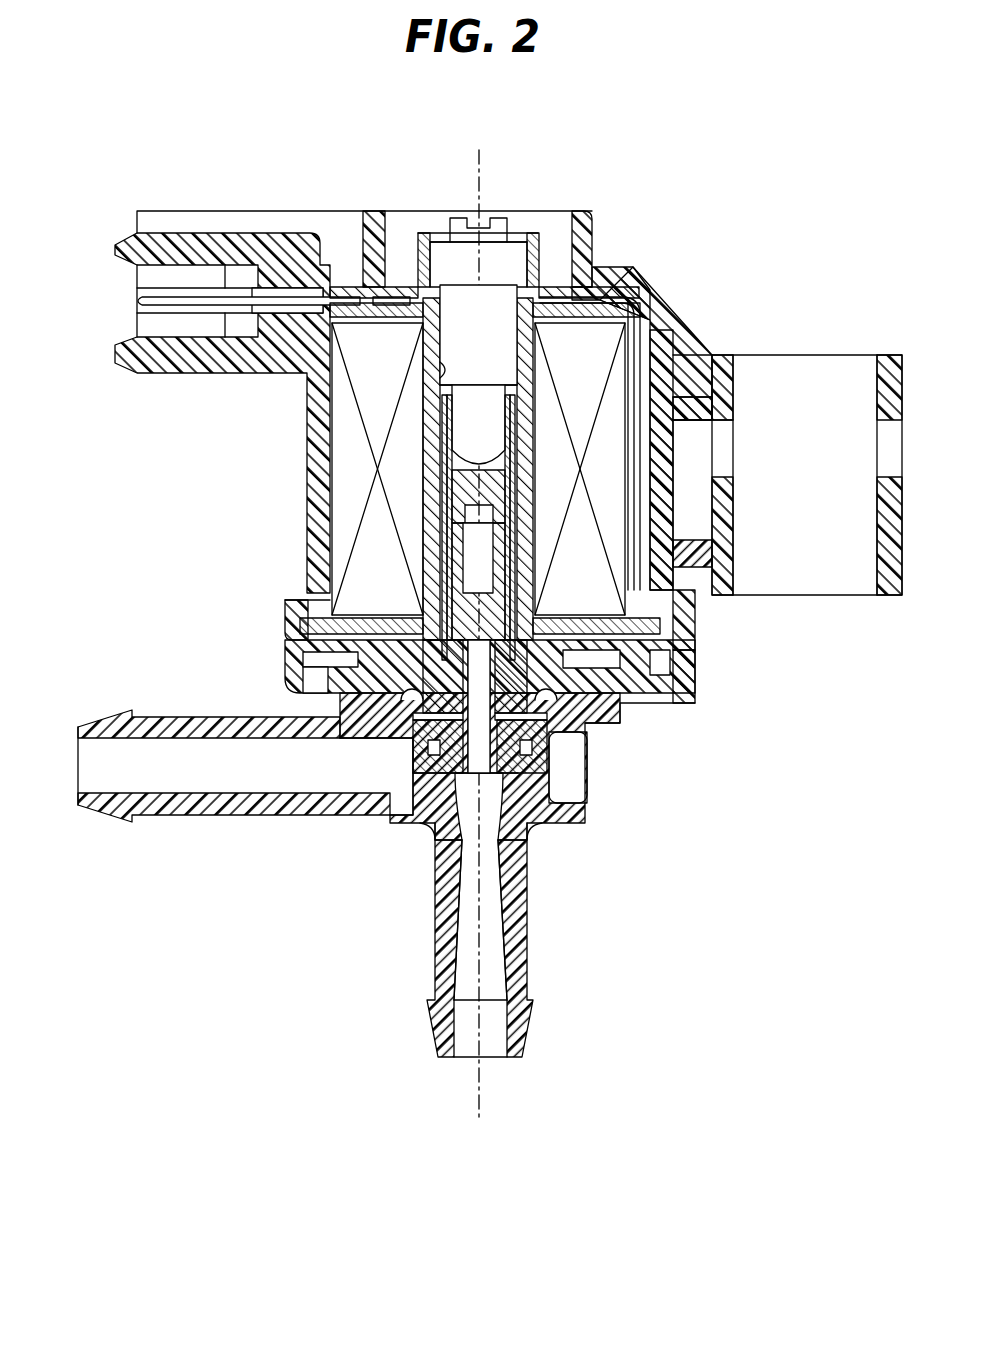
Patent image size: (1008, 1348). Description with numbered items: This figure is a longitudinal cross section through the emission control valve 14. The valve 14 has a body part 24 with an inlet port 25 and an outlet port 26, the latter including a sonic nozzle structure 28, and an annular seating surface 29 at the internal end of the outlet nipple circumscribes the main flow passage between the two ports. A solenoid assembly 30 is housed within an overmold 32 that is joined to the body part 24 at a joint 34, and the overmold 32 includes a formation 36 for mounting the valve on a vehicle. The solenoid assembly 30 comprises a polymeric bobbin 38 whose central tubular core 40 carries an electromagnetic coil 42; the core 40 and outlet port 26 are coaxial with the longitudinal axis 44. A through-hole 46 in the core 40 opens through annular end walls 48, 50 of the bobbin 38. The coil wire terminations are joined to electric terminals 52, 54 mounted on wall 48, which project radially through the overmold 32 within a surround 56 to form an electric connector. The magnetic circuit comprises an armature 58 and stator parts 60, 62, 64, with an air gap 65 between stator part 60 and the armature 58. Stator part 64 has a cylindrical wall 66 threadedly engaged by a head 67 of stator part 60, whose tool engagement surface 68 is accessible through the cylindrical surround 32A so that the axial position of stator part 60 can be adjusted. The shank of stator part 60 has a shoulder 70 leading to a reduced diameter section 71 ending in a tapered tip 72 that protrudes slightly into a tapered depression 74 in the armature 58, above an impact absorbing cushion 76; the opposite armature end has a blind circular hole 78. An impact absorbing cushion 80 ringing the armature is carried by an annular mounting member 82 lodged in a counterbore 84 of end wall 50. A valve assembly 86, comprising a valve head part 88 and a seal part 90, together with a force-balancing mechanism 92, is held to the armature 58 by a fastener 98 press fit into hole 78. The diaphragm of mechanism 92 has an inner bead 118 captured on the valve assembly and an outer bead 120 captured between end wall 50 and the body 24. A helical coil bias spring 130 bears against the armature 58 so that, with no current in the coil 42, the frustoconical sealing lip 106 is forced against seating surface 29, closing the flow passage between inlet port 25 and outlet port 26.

The valve 14 is at (133, 210).
The body part 24 is at (590, 828).
The inlet port 25 is at (148, 818).
The outlet port 26 is at (525, 992).
The sonic nozzle structure 28 is at (440, 850).
The annular seating surface 29 is at (590, 805).
The solenoid assembly 30 is at (640, 278).
The overmold 32 is at (668, 312).
The cylindrical surround 32A is at (580, 212).
The joint 34 is at (622, 704).
The formation 36 is at (853, 355).
The polymeric bobbin 38 is at (648, 330).
The central tubular core 40 is at (432, 322).
The electromagnetic coil 42 is at (642, 375).
The longitudinal axis 44 is at (481, 1082).
The through-hole 46 is at (440, 378).
The end wall 48 is at (590, 297).
The end wall 50 is at (320, 650).
The electric terminal 52 is at (196, 300).
The electric terminal 54 is at (150, 298).
The surround 56 is at (240, 355).
The armature 58 is at (515, 550).
The stator part 60 is at (525, 260).
The stator part 62 is at (290, 612).
The stator part 64 is at (688, 362).
The air gap 65 is at (435, 525).
The cylindrical wall 66 is at (408, 250).
The head 67 is at (445, 262).
The tool engagement surface 68 is at (468, 240).
The shoulder 70 is at (492, 385).
The reduced diameter section 71 is at (522, 418).
The tapered tip 72 is at (446, 460).
The tapered depression 74 is at (515, 455).
The impact absorbing cushion 76 is at (498, 510).
The blind circular hole 78 is at (440, 585).
The impact absorbing cushion 80 is at (560, 628).
The annular mounting member 82 is at (697, 652).
The counterbore 84 is at (697, 690).
The valve assembly 86 is at (570, 768).
The valve head part 88 is at (575, 742).
The seal part 90 is at (410, 790).
The force-balancing mechanism 92 is at (410, 718).
The fastener 98 is at (515, 845).
The frustoconical sealing lip 106 is at (450, 820).
The bead 118 is at (350, 820).
The bead 120 is at (600, 722).
The helical coil bias spring 130 is at (450, 410).